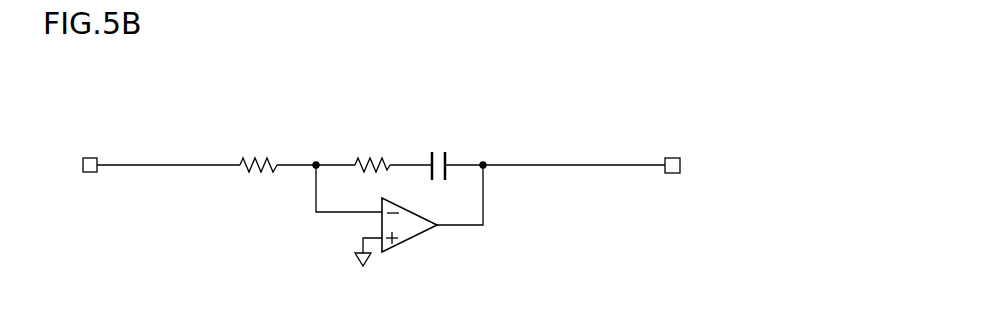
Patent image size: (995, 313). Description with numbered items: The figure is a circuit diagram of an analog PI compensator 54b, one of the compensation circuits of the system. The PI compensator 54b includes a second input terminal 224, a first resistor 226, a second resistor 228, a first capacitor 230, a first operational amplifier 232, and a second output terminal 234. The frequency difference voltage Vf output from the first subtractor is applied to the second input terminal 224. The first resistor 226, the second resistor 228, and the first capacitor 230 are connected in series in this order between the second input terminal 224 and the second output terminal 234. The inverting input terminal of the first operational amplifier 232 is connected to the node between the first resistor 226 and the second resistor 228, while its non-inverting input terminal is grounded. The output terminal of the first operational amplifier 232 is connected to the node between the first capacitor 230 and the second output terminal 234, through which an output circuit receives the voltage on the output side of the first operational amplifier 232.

The second input terminal 224 is at (97, 158).
The first resistor 226 is at (262, 160).
The second resistor 228 is at (375, 160).
The first capacitor 230 is at (437, 150).
The first operational amplifier 232 is at (410, 238).
The second output terminal 234 is at (680, 158).
The analog PI compensator 54b is at (710, 97).